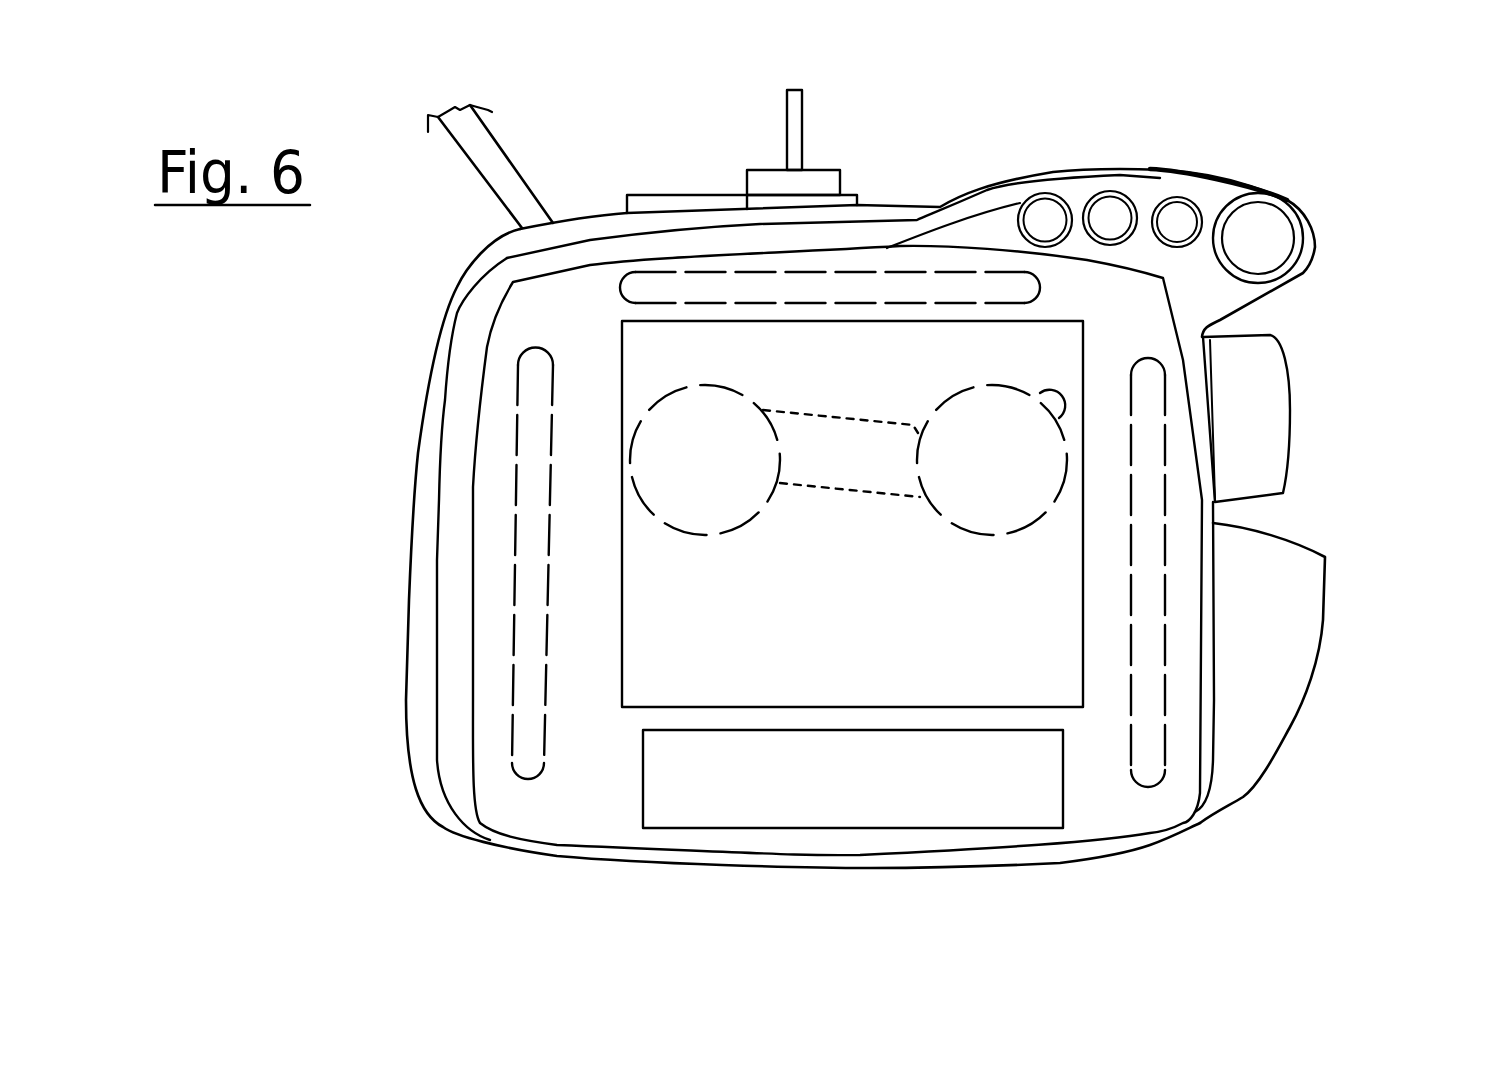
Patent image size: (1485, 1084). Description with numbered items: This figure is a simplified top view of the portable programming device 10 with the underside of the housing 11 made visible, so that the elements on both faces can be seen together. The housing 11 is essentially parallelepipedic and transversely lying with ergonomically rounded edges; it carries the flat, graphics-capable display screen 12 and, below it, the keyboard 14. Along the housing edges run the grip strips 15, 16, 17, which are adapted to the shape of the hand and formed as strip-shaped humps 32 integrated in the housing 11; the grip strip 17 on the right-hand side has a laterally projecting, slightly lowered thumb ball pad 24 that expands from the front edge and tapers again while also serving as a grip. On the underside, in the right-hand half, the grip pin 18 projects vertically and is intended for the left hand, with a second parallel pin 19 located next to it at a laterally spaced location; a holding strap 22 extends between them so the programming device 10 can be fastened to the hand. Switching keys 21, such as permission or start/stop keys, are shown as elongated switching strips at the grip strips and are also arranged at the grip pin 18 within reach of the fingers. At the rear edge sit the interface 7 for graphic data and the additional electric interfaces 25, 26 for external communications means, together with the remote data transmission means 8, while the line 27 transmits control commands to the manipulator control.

The interface 7 is at (803, 200).
The remote data transmission means 8 is at (795, 130).
The programming device 10 is at (1357, 265).
The housing 11 is at (440, 320).
The display screen 12 is at (852, 514).
The keyboard 14 is at (853, 779).
The grip strip 15 is at (565, 238).
The grip strip 16 is at (465, 523).
The grip strip 17 is at (1336, 579).
The grip pin 18 is at (995, 508).
The pin 19 is at (702, 510).
The switching keys 21 is at (830, 288).
The holding strap 22 is at (840, 473).
The thumb ball pad 24 is at (1273, 610).
The electric interface 25 is at (742, 124).
The electric interface 26 is at (672, 207).
The line 27 is at (503, 175).
The strip-shaped humps 32 is at (686, 462).